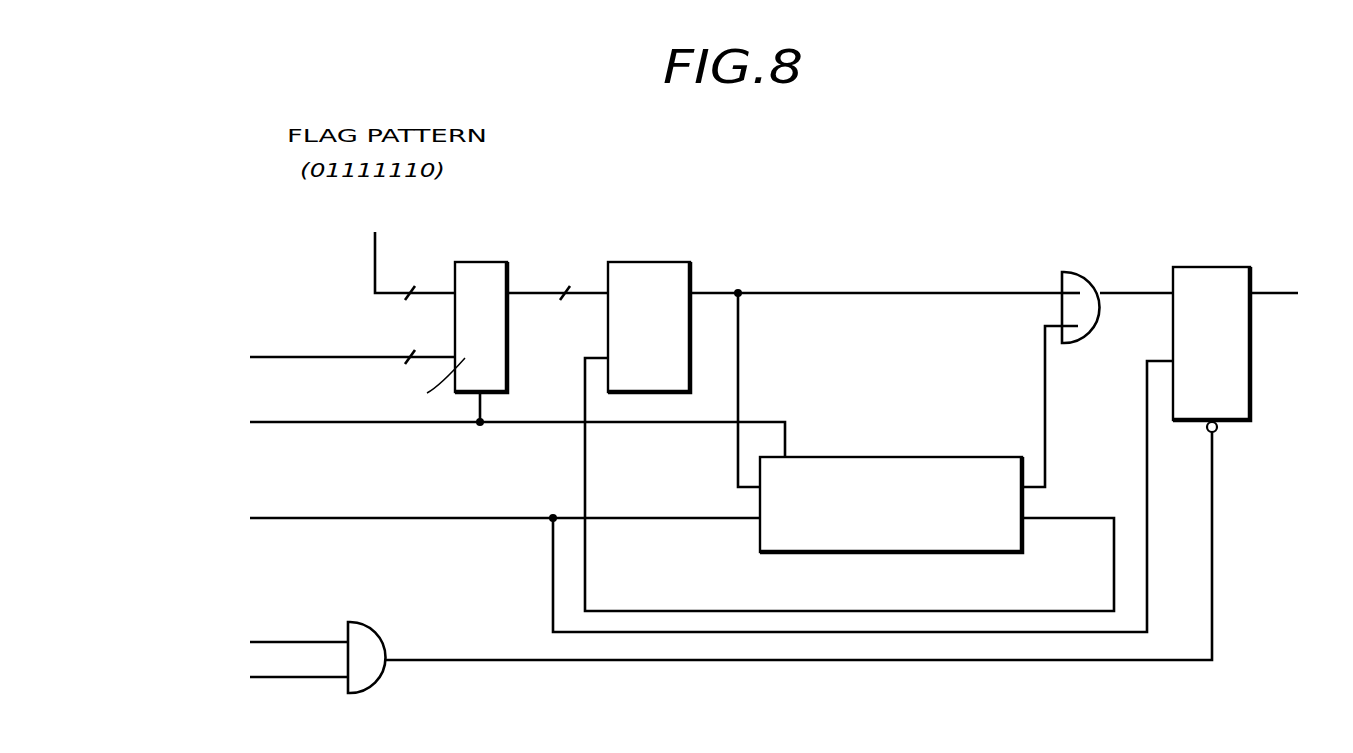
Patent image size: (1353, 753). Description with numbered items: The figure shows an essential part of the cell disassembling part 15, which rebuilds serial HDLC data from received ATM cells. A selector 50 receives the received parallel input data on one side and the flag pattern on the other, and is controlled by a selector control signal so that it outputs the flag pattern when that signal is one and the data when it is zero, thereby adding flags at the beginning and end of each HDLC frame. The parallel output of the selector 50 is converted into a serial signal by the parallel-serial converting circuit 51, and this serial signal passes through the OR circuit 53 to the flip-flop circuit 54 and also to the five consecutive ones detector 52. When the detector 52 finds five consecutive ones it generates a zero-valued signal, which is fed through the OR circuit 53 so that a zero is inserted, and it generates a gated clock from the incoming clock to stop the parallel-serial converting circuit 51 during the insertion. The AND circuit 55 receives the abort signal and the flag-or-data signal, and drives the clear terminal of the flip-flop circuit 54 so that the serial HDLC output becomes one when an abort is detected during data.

The cell disassembling part 15 is at (993, 171).
The selector 50 is at (478, 260).
The parallel-serial (P/S) converting circuit 51 is at (652, 260).
The 5 consecutive "1"s detector 52 is at (850, 457).
The OR circuit 53 is at (1097, 252).
The flip-flop circuit 54 is at (1183, 265).
The AND circuit 55 is at (372, 628).